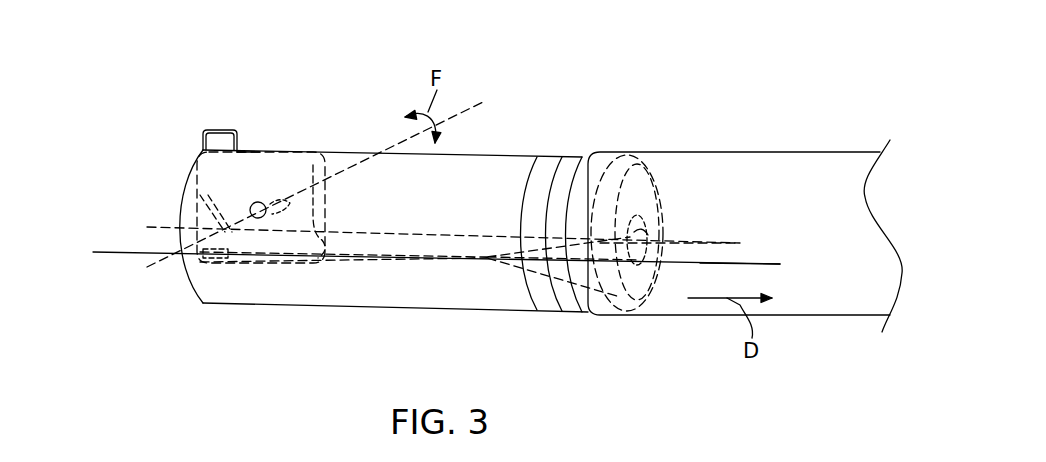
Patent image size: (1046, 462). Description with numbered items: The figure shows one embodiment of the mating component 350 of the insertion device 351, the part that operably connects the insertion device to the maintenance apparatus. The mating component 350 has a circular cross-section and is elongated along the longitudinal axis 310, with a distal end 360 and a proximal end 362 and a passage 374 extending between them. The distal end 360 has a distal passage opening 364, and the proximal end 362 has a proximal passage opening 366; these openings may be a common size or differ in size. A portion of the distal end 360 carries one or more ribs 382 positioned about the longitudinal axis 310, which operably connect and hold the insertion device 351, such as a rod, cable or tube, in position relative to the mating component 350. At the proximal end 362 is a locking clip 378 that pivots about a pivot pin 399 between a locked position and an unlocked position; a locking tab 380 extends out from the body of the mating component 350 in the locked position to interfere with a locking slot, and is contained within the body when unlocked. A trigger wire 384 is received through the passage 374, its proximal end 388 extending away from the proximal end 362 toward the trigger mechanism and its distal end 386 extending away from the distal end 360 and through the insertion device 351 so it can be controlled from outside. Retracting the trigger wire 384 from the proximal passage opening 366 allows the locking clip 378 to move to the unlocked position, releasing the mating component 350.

The mating component 350 is at (192, 65).
The insertion device 351 is at (796, 152).
The distal end 360 is at (668, 137).
The proximal end 362 is at (170, 183).
The distal passage opening 364 is at (650, 280).
The proximal passage opening 366 is at (197, 257).
The passage 374 is at (648, 235).
The locking clip 378 is at (245, 138).
The locking tab 380 is at (223, 120).
The ribs 382 is at (592, 142).
The trigger wire 384 is at (350, 260).
The distal end of the trigger wire 386 is at (775, 262).
The proximal end of the trigger wire 388 is at (95, 243).
The pivot pin 399 is at (250, 207).
The longitudinal axis 310 is at (722, 226).